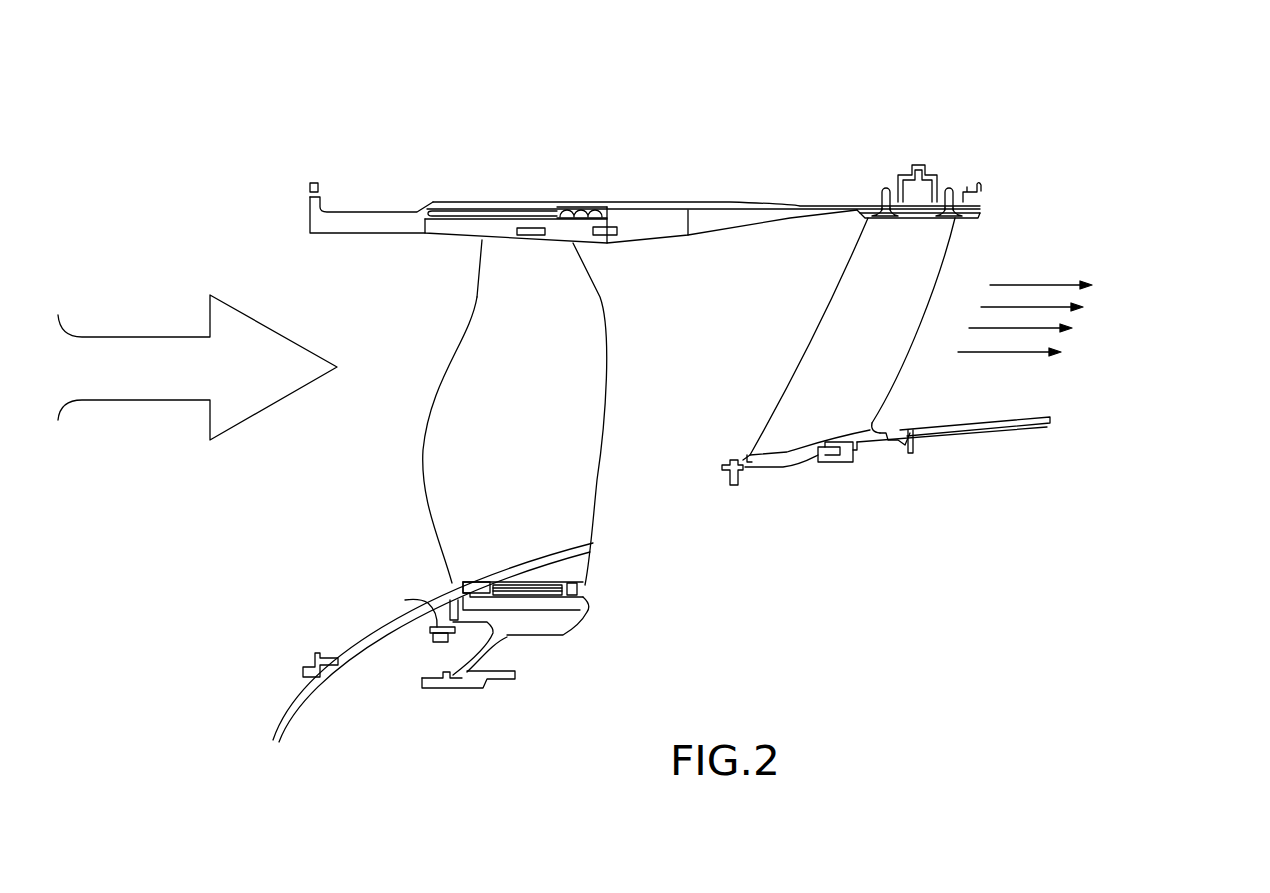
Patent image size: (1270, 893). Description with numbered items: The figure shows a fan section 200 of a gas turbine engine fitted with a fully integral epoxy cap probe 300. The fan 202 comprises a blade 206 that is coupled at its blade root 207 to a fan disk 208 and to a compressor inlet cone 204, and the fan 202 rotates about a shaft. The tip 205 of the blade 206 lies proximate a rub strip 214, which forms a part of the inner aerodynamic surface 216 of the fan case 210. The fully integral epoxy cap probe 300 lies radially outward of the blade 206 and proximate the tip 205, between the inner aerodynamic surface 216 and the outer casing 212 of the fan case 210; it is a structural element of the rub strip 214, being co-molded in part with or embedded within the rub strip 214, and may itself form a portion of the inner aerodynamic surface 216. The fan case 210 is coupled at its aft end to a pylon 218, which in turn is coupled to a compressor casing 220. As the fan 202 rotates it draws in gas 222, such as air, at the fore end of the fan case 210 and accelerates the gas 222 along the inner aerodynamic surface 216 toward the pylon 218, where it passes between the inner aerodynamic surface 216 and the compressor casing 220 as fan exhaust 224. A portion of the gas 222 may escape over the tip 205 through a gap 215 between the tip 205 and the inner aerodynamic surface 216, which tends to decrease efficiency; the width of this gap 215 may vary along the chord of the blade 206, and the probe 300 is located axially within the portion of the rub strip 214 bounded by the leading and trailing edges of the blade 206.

The fan section 200 is at (192, 110).
The fan 202 is at (518, 446).
The compressor inlet cone 204 is at (350, 628).
The tip 205 is at (490, 247).
The blade 206 is at (452, 500).
The blade root 207 is at (573, 585).
The fan disk 208 is at (568, 607).
The fan case 210 is at (407, 222).
The outer casing 212 is at (670, 202).
The rub strip 214 is at (440, 232).
The gap 215 is at (540, 240).
The inner aerodynamic surface 216 is at (623, 245).
The pylon 218 is at (945, 238).
The compressor casing 220 is at (960, 435).
The gas 222 is at (161, 399).
The fan exhaust 224 is at (1062, 283).
The fully integral epoxy cap probe 300 is at (545, 238).